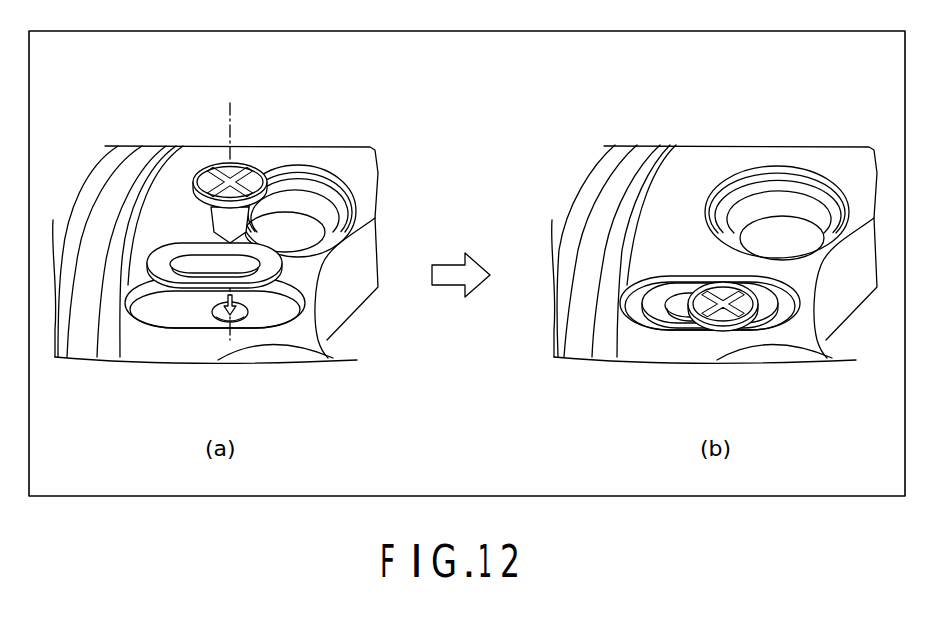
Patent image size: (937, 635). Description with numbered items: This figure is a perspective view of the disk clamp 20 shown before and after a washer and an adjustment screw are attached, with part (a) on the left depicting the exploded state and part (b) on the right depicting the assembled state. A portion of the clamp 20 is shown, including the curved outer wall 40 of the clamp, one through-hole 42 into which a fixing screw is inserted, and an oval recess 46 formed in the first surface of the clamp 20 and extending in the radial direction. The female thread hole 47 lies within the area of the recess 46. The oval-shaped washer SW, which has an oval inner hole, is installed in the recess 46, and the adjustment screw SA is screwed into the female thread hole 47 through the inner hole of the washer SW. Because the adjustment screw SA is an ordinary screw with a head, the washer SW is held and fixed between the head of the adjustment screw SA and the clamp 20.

The clamp 20 is at (176, 146).
The cylindrical wall portion 40 is at (123, 200).
The through-hole 42 is at (297, 210).
The oval recess 46 is at (163, 318).
The female thread hole 47 is at (220, 322).
The washer SW is at (263, 263).
The adjustment screw SA is at (237, 168).